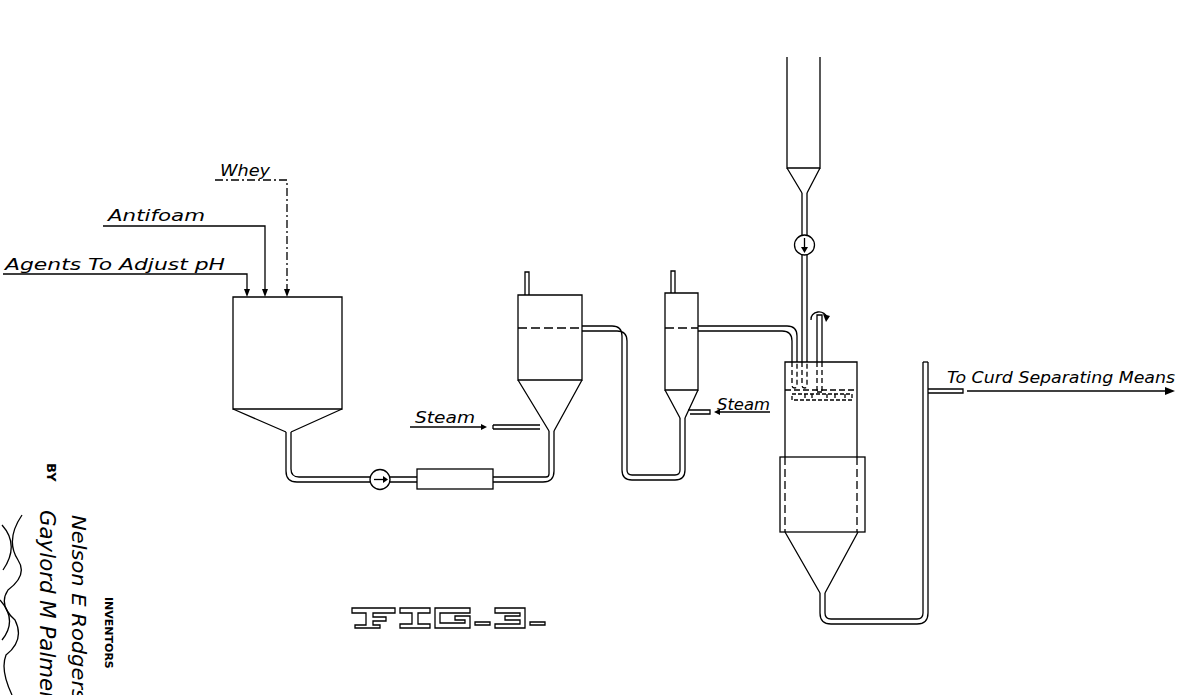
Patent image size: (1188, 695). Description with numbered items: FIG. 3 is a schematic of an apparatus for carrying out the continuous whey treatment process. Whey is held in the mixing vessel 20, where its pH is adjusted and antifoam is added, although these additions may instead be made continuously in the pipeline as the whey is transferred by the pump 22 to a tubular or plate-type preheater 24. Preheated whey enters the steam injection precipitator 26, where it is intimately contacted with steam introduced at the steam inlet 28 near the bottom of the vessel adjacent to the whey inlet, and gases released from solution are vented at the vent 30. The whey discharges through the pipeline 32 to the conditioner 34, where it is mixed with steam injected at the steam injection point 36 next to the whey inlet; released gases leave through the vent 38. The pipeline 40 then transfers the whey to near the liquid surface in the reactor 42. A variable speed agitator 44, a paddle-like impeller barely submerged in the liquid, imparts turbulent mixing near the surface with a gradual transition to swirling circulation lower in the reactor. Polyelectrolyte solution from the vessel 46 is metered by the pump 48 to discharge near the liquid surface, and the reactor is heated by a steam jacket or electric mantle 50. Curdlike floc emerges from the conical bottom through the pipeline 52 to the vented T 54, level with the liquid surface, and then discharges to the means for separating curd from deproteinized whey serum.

The mixing vessel 20 is at (233, 345).
The pump 22 is at (378, 490).
The preheater 24 is at (465, 490).
The steam injection precipitator 26 is at (518, 340).
The steam inlet 28 is at (513, 430).
The vent 30 is at (524, 272).
The pipeline 32 is at (652, 481).
The conditioner 34 is at (700, 352).
The steam injection point 36 is at (701, 415).
The vent 38 is at (670, 272).
The pipeline 40 is at (745, 327).
The reactor 42 is at (841, 565).
The variable speed agitator 44 is at (825, 327).
The vessel 46 is at (820, 118).
The pump 48 is at (815, 247).
The steam jacket or electric mantle 50 is at (865, 497).
The pipeline 52 is at (929, 535).
The vented T 54 is at (922, 362).